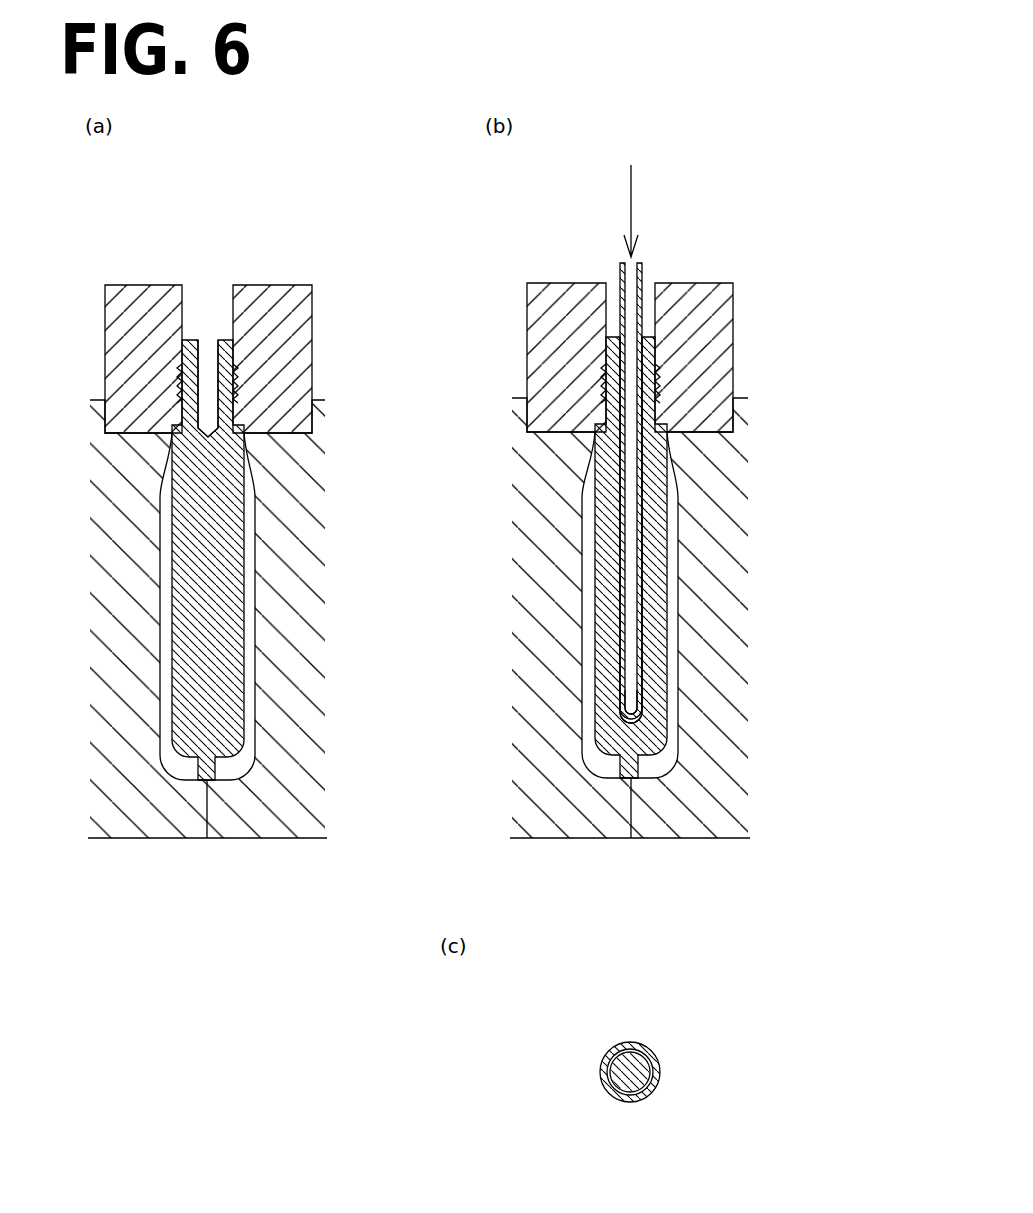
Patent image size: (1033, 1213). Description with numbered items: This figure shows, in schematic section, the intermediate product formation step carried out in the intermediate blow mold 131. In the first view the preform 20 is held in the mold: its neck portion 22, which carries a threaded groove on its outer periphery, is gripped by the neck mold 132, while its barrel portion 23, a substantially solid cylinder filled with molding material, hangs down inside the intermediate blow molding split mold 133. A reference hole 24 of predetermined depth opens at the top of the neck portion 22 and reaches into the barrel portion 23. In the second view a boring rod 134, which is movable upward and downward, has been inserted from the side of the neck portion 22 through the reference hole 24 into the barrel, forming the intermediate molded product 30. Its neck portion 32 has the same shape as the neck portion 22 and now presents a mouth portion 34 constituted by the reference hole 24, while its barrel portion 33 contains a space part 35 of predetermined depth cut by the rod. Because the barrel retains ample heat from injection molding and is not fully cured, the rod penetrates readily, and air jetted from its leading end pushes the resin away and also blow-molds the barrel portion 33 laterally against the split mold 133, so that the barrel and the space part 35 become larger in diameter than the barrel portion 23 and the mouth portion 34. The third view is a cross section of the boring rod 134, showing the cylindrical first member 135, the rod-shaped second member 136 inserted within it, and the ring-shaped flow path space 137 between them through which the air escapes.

The intermediate blow mold 131 is at (323, 178).
The neck mold 132 is at (318, 347).
The intermediate blow molding split mold 133 is at (288, 612).
The preform 20 is at (284, 507).
The barrel portion 23 is at (225, 656).
The reference hole 24 is at (205, 335).
The neck portion 22 is at (243, 338).
The intermediate molded product 30 is at (700, 505).
The barrel portion 33 is at (640, 657).
The mouth portion 34 is at (612, 337).
The neck portion 32 is at (652, 337).
The boring rod 134 is at (619, 562).
The space part 35 is at (628, 660).
The first member 135 is at (655, 1054).
The second member 136 is at (604, 1082).
The ring-shaped flow path space 137 is at (652, 1094).